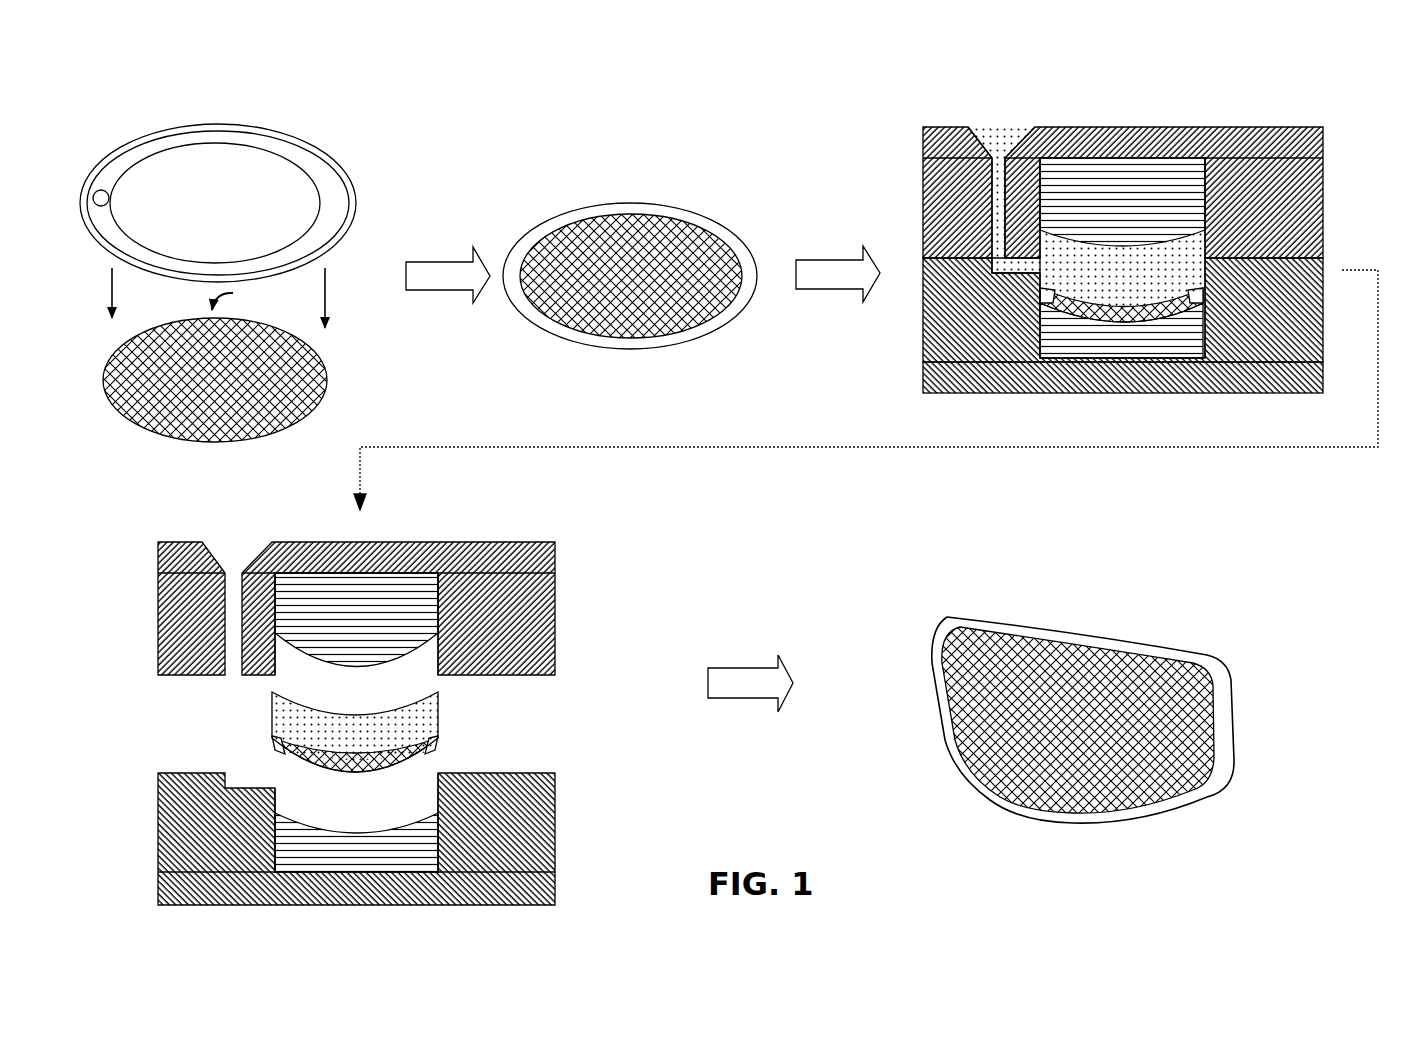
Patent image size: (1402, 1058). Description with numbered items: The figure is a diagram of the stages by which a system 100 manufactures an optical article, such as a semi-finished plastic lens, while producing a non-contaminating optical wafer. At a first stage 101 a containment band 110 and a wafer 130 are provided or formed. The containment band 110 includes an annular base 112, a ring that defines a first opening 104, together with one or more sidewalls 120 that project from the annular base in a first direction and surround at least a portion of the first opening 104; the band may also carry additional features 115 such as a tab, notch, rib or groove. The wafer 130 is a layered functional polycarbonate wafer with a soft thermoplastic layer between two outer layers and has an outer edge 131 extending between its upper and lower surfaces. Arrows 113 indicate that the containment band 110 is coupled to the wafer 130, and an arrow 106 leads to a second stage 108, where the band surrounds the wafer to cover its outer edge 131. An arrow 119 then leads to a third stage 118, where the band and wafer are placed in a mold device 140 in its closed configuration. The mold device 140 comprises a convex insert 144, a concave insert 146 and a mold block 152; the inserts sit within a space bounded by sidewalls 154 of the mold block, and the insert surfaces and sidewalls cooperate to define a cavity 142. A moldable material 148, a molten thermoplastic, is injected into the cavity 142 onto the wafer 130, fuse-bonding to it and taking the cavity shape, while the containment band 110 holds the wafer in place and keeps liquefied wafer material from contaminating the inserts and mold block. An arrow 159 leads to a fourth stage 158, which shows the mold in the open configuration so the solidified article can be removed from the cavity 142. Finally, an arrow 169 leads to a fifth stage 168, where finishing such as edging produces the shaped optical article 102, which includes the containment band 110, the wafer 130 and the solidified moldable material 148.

The system 100 is at (160, 88).
The first stage 101 is at (162, 125).
The optical article 102 is at (455, 712).
The first opening 104 is at (205, 232).
The arrow 106 is at (447, 260).
The second stage 108 is at (546, 195).
The containment band 110 is at (320, 126).
The annular base 112 is at (276, 157).
The arrows 113 is at (113, 300).
The additional features 115 is at (105, 205).
The third stage 118 is at (912, 76).
The arrow 119 is at (851, 260).
The sidewalls 120 is at (228, 128).
The wafer 130 is at (322, 362).
The outer edge 131 is at (326, 395).
The mold device 140 is at (1318, 118).
The cavity 142 is at (1122, 268).
The convex insert 144 is at (740, 412).
The concave insert 146 is at (739, 587).
The moldable material 148 is at (997, 150).
The mold block 152 is at (1307, 198).
The sidewalls 154 is at (1040, 180).
The fourth stage 158 is at (175, 512).
The arrow 159 is at (690, 447).
The fifth stage 168 is at (927, 567).
The arrow 169 is at (741, 668).